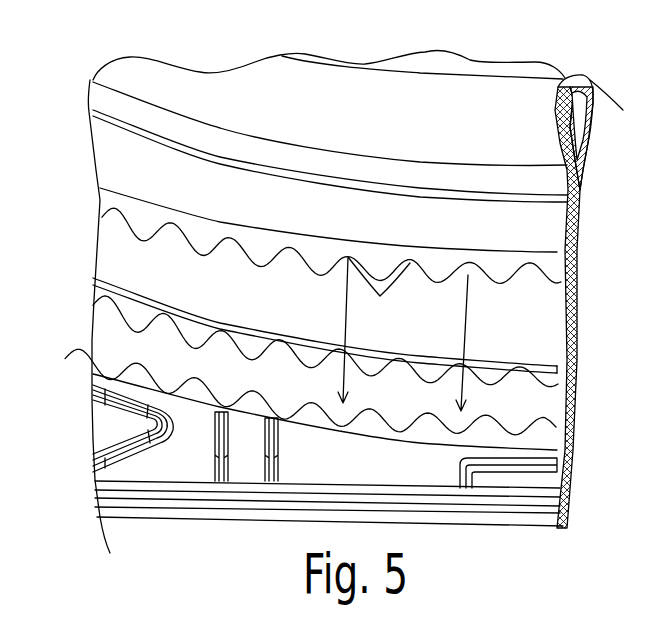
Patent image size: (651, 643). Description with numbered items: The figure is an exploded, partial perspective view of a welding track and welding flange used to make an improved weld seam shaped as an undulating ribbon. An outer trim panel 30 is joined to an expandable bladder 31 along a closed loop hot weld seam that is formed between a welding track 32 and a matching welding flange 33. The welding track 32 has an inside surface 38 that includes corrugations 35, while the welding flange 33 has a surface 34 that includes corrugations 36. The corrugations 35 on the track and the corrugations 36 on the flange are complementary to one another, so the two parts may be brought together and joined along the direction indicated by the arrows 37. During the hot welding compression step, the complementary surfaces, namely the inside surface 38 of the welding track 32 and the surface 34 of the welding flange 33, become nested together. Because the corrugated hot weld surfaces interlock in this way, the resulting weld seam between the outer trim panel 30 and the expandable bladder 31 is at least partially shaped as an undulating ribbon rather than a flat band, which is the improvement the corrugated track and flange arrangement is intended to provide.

The outer trim panel 30 is at (210, 523).
The expandable bladder 31 is at (86, 79).
The welding track 32 is at (399, 430).
The welding flange 33 is at (290, 203).
The surface 34 is at (183, 240).
The corrugations 35 is at (282, 350).
The corrugations 36 is at (172, 224).
The arrows 37 is at (345, 296).
The inside surface 38 is at (118, 335).